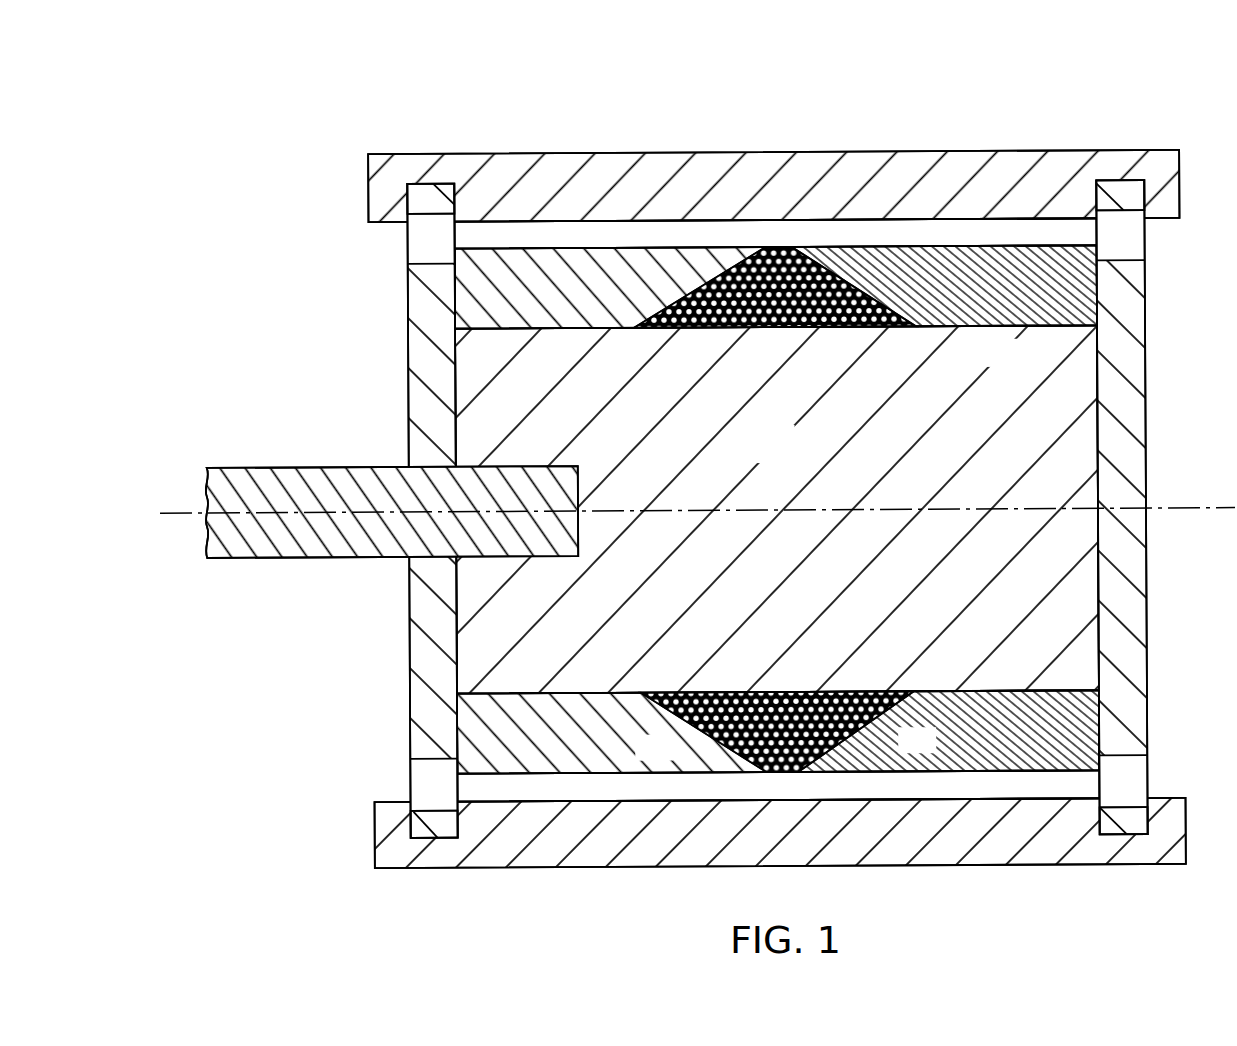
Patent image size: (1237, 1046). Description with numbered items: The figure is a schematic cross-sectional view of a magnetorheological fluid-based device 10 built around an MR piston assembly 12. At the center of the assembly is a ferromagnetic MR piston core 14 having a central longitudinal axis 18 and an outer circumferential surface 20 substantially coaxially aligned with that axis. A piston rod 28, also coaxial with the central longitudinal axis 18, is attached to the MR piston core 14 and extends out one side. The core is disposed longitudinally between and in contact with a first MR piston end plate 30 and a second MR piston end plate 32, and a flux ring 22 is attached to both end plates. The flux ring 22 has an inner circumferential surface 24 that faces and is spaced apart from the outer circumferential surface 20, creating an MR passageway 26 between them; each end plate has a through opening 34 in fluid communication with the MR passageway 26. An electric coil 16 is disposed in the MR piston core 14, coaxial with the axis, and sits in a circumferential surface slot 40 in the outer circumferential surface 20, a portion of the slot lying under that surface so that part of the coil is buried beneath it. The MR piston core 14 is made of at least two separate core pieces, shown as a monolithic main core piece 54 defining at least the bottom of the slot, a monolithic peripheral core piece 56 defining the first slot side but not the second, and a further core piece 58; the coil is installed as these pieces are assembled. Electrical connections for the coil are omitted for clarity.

The magnetorheological fluid-based device 10 is at (1167, 125).
The MR piston assembly 12 is at (684, 147).
The MR piston core 14 is at (775, 272).
The electric coil 16 is at (778, 731).
The central longitudinal axis 18 is at (1212, 505).
The outer circumferential surface 20 is at (533, 246).
The flux ring 22 is at (855, 858).
The inner circumferential surface 24 is at (940, 796).
The MR passageway 26 is at (805, 232).
The piston rod 28 is at (262, 467).
The first MR piston end plate 30 is at (412, 345).
The second MR piston end plate 32 is at (1128, 348).
The through opening 34 is at (418, 238).
The circumferential surface slot 40 is at (882, 708).
The monolithic main core piece 54 is at (786, 455).
The monolithic peripheral core piece 56 is at (582, 272).
The separate core piece 58 is at (1008, 322).